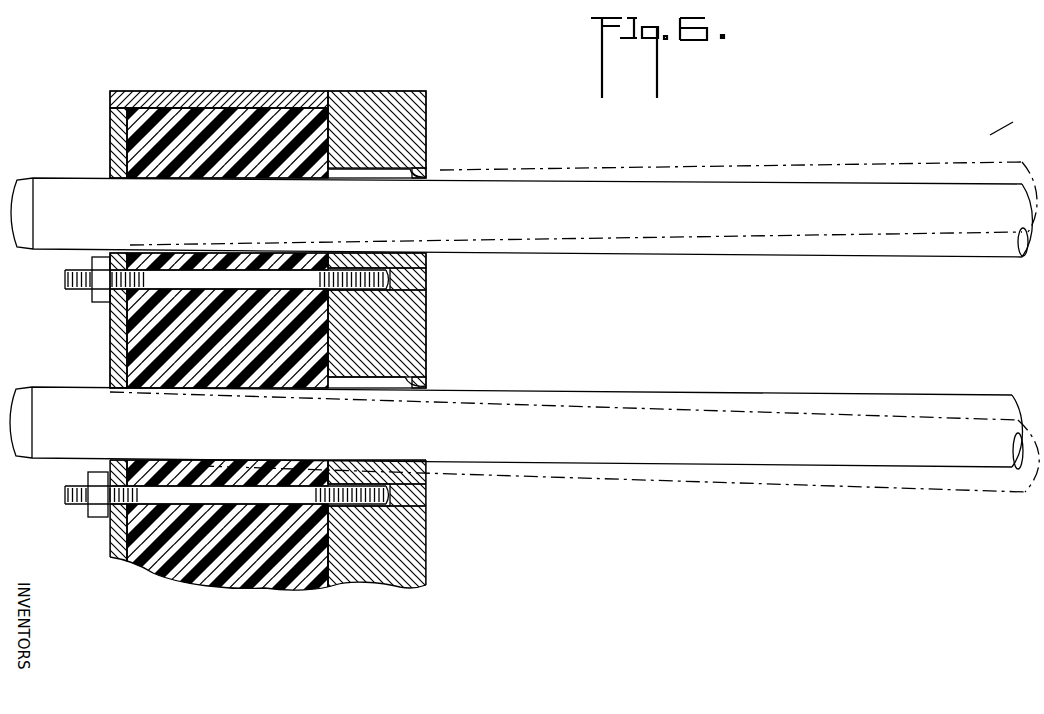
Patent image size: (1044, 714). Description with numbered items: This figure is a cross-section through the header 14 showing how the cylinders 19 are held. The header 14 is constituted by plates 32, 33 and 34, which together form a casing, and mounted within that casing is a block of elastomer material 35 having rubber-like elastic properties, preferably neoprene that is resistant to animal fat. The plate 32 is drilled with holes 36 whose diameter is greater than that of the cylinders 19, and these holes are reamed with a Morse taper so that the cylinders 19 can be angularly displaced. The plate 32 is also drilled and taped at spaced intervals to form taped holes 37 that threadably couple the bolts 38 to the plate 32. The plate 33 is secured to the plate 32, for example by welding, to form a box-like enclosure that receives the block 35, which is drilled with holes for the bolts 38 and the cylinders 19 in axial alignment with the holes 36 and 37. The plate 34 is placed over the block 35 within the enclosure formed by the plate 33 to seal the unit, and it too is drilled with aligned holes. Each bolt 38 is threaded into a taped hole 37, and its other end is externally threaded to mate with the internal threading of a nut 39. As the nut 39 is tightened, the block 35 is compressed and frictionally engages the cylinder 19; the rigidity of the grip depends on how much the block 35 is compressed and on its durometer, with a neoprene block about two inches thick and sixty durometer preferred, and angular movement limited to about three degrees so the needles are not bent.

The header 14 is at (151, 90).
The cylinder 19 is at (731, 197).
The plate 32 is at (379, 100).
The plate 33 is at (257, 93).
The plate 34 is at (110, 132).
The block of elastomer material 35 is at (212, 120).
The hole 36 is at (430, 170).
The taped hole 37 is at (392, 283).
The bolt 38 is at (278, 283).
The nut 39 is at (97, 303).